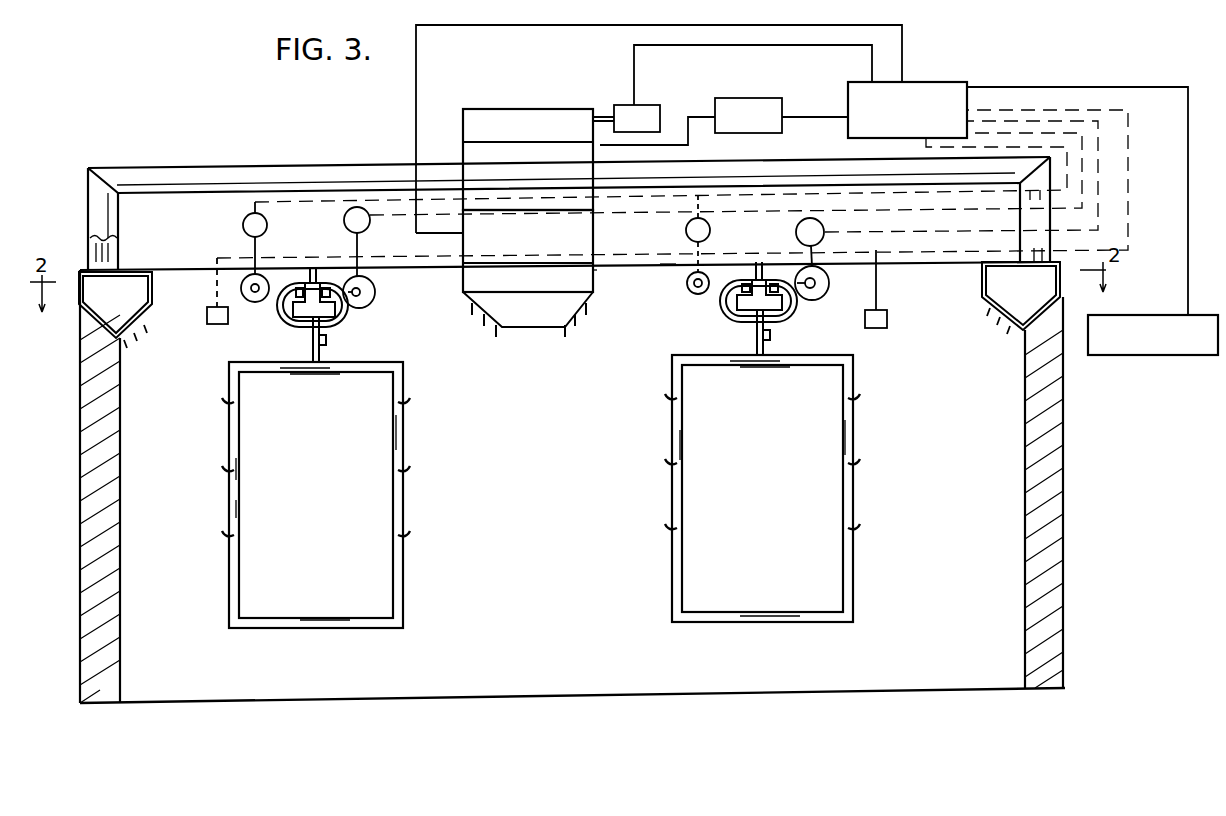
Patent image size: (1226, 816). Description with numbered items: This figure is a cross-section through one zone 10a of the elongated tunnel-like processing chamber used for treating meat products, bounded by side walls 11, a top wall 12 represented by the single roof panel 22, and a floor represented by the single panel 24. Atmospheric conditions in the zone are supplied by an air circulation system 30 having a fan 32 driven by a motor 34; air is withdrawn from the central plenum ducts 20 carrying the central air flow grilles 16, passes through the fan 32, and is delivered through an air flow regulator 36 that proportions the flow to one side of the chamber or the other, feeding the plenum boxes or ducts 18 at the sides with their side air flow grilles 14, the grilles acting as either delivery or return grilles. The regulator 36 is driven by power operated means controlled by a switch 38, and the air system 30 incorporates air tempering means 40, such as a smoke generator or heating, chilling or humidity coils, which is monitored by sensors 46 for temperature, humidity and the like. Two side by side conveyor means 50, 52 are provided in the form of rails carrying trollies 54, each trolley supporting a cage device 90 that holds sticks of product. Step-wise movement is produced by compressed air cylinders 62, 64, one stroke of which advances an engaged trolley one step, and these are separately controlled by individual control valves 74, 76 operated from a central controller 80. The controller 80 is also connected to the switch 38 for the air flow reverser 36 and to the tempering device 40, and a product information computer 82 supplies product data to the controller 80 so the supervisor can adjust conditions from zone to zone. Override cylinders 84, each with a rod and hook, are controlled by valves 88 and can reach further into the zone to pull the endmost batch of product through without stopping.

The zone 10a is at (948, 452).
The side walls 11 is at (80, 430).
The top wall 12 is at (210, 268).
The side air flow grilles 14 is at (145, 334).
The central air flow grilles 16 is at (475, 321).
The plenum boxes or ducts 18 is at (129, 278).
The central plenum ducts 20 is at (594, 275).
The panel 22 is at (668, 264).
The panel 24 is at (557, 690).
The air circulation system 30 is at (356, 121).
The fan 32 is at (494, 109).
The motor 34 is at (622, 105).
The air flow regulator 36 is at (463, 145).
The switch 38 is at (783, 103).
The air tempering means 40 is at (594, 232).
The sensors 46 is at (213, 324).
The conveyor means 50 is at (322, 318).
The conveyor means 52 is at (775, 310).
The trollies 54 is at (348, 320).
The compressed air cylinder 62 is at (375, 295).
The compressed air cylinder 64 is at (828, 290).
The control valve 74 is at (344, 222).
The control valve 76 is at (796, 232).
The central controller 80 is at (950, 82).
The product information computer 82 is at (1154, 355).
The override cylinders 84 is at (247, 276).
The valves 88 is at (242, 214).
The cage device 90 is at (320, 630).